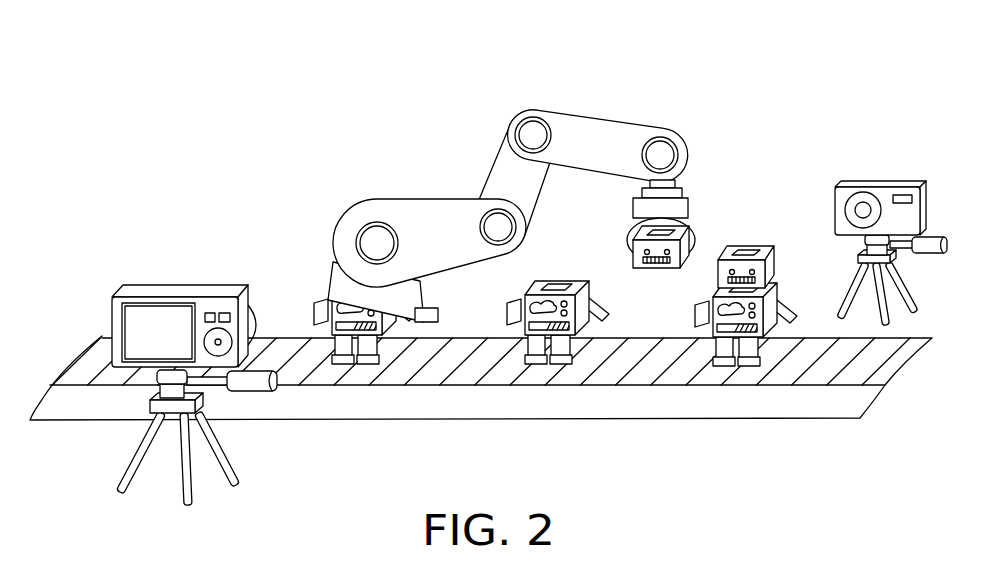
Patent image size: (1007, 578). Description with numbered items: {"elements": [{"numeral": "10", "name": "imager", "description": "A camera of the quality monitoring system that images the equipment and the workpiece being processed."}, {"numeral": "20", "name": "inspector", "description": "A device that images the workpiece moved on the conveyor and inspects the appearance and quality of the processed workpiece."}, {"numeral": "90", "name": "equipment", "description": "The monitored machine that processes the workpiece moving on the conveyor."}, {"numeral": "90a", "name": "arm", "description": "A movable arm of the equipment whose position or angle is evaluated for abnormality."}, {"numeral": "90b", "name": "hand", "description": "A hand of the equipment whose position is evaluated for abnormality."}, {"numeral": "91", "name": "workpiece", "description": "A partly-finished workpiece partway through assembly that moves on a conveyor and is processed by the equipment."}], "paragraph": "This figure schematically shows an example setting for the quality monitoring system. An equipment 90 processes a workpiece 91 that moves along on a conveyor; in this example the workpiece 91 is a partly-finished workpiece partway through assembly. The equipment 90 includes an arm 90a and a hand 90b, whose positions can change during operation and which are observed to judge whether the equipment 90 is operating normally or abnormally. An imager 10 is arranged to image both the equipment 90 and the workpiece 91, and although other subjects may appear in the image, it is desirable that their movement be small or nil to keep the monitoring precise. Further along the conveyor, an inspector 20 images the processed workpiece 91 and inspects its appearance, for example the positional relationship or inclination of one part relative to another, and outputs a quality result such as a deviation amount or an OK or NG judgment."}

The first camera (image capturing device) on tripod 10 is at (178, 292).
The second camera (image capturing device) on tripod 20 is at (877, 182).
The robot / assembly system 90 is at (593, 182).
The robot arm 90a is at (600, 133).
The robot hand (gripper) 90b is at (672, 208).
The workpiece (toy robot being assembled) 91 is at (366, 363).